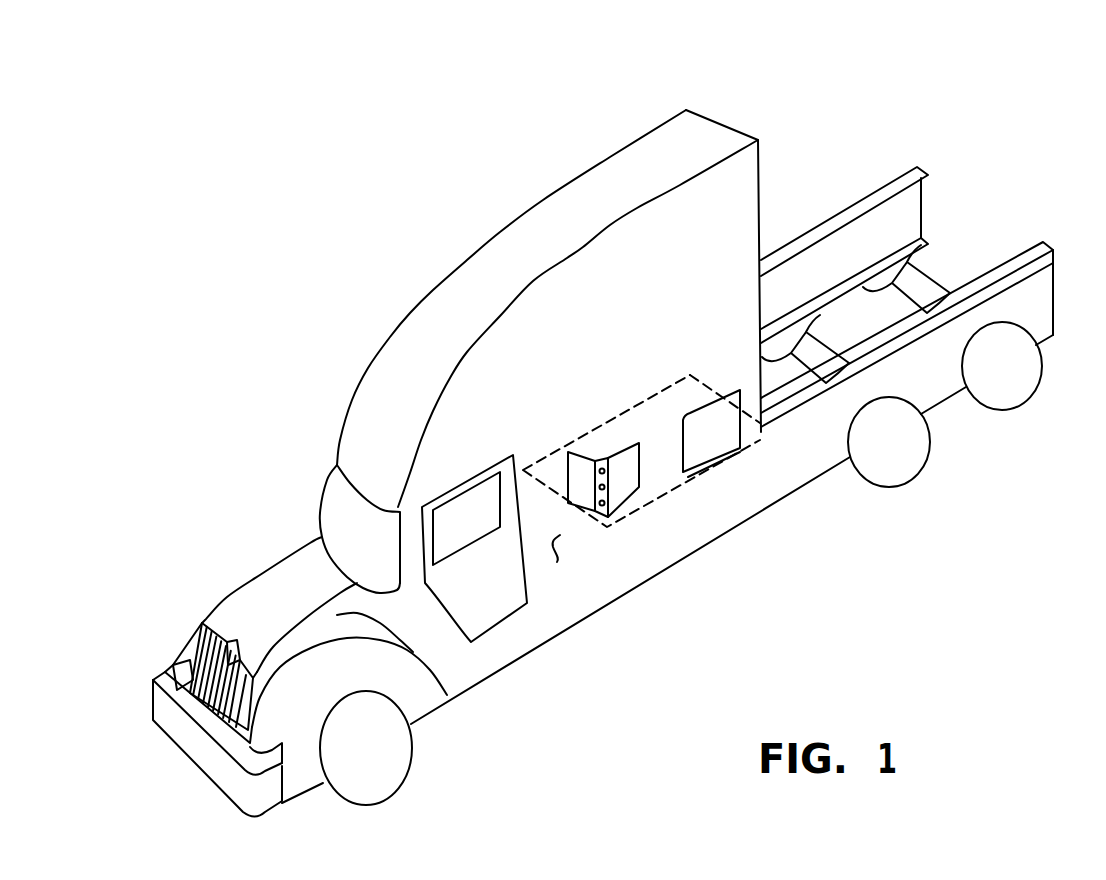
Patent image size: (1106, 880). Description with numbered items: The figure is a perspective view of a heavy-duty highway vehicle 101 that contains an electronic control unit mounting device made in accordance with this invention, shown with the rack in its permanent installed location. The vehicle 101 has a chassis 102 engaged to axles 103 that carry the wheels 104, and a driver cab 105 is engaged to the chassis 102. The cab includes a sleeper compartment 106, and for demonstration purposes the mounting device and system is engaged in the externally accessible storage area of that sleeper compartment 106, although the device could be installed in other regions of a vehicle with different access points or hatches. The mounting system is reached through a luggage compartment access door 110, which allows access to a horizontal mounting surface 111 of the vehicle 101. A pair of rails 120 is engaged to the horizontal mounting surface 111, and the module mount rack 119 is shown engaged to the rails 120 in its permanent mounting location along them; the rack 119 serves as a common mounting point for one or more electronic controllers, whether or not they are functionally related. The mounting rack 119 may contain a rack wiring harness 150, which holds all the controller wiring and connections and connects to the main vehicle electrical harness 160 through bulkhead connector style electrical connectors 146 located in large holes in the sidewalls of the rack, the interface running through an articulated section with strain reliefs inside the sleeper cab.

The vehicle 101 is at (357, 104).
The chassis 102 is at (888, 182).
The axles 103 is at (932, 282).
The wheels 104 is at (926, 471).
The driver cab 105 is at (444, 446).
The sleeper compartment 106 is at (638, 276).
The luggage compartment access door 110 is at (731, 472).
The horizontal mounting surface 111 is at (752, 436).
The module mount rack 119 is at (632, 490).
The pair of rails 120 is at (661, 495).
The electrical connectors 146 is at (603, 461).
The rack wiring harness 150 is at (582, 507).
The main vehicle electrical harness 160 is at (565, 543).